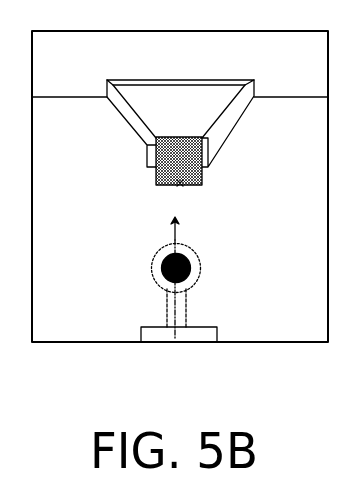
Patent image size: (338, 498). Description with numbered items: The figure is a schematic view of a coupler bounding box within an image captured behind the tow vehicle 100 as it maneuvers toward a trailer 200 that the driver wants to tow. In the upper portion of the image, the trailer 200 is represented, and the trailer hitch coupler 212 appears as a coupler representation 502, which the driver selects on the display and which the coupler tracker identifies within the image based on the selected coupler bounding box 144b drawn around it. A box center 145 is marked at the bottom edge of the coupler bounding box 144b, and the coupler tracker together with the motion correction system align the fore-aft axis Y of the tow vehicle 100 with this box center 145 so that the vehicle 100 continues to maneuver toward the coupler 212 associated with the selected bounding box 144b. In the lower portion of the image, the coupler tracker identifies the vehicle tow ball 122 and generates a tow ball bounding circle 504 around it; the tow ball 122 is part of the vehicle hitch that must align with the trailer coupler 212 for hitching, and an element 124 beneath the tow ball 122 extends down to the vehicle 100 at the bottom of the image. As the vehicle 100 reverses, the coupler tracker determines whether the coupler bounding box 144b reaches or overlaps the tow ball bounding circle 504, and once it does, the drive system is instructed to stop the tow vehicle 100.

The trailer 200 is at (157, 59).
The coupler bounding box 144b is at (147, 163).
The trailer hitch coupler 212 is at (134, 168).
The coupler representation 502 is at (156, 172).
The box center 145 is at (180, 184).
The tow vehicle tow ball 122 is at (160, 263).
The tow ball bounding circle 504 is at (198, 274).
The support stem 124 is at (166, 307).
The tow vehicle 100 is at (141, 335).